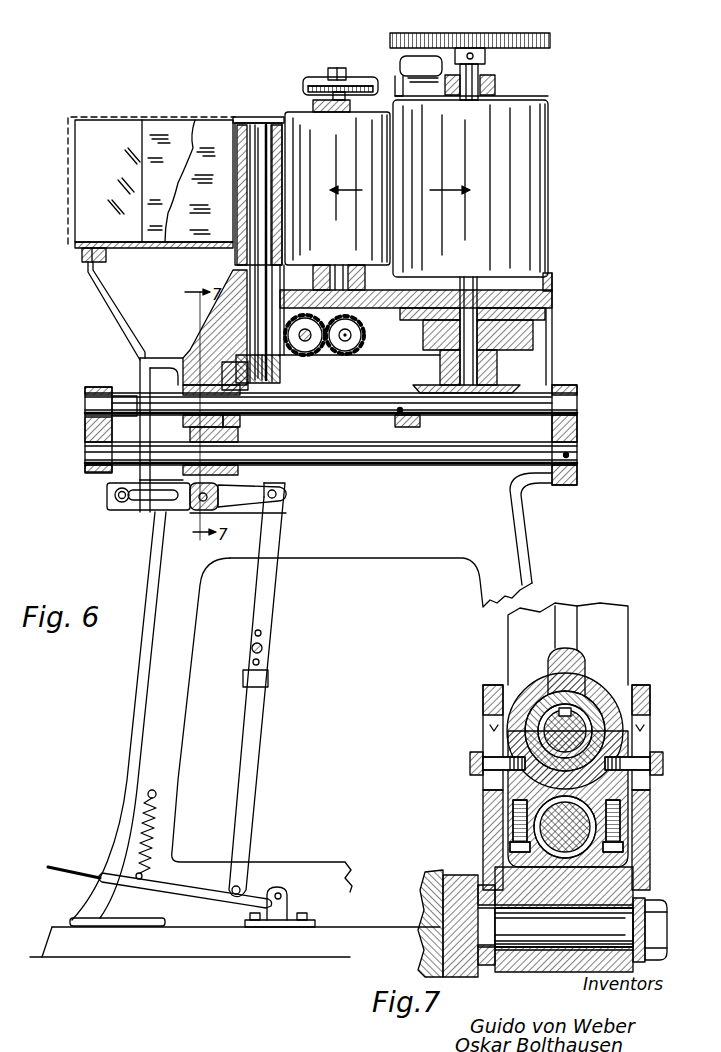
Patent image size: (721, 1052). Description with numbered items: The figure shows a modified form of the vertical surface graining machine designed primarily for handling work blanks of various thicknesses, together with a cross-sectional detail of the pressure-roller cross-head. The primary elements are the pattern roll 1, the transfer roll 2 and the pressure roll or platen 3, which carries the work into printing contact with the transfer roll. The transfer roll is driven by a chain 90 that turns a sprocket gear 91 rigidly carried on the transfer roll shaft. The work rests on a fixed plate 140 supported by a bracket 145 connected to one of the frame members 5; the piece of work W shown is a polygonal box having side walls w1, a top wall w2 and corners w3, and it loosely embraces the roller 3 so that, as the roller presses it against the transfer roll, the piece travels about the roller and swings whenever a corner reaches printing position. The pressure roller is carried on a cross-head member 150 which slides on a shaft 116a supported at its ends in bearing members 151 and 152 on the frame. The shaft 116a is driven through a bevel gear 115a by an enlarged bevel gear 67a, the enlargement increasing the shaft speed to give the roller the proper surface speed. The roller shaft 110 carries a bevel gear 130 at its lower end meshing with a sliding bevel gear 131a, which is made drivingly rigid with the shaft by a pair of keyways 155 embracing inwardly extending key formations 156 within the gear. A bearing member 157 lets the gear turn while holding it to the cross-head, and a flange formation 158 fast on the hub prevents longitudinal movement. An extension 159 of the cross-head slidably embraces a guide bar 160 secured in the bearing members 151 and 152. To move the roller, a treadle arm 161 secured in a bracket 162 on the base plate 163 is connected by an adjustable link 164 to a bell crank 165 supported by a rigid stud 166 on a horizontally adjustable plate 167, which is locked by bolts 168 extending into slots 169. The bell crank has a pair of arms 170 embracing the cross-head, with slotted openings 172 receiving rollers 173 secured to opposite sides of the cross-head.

In FIG. 6, the pattern roll 1 is at (470, 155).
In FIG. 6, the transfer roll 2 is at (337, 188).
In FIG. 6, the pressure roll or platen 3 is at (236, 122).
In FIG. 6, the frame members 5 is at (311, 699).
In FIG. 6, the bevel gear 67a is at (520, 385).
In FIG. 6, the chain 90 is at (305, 86).
In FIG. 6, the sprocket gear 91 is at (327, 78).
In FIG. 6, the shaft for the pressure roller 110 is at (252, 278).
In FIG. 6, the bevel gear 115a is at (418, 427).
In FIG. 6, the shaft 116a is at (346, 418).
In FIG. 6, the bevel gear 130 is at (282, 385).
In FIG. 6, the sliding bevel gear 131a is at (240, 430).
In FIG. 6, the fixed plate 140 is at (118, 246).
In FIG. 6, the bracket 145 is at (100, 282).
In FIG. 6, the cross-head member 150 is at (228, 322).
In FIG. 6, the bearing member 151 is at (562, 394).
In FIG. 6, the bearing member 152 is at (92, 430).
In FIG. 6, the keyways 155 is at (120, 396).
In FIG. 7, the key formations 156 is at (549, 680).
In FIG. 6, the bearing member 157 is at (188, 378).
In FIG. 6, the flange formation 158 is at (190, 428).
In FIG. 6, the extension 159 is at (215, 470).
In FIG. 6, the guide bar 160 is at (374, 462).
In FIG. 6, the treadle arm 161 is at (183, 885).
In FIG. 6, the bracket 162 is at (287, 912).
In FIG. 6, the base plate 163 is at (216, 950).
In FIG. 6, the adjustable link 164 is at (250, 748).
In FIG. 6, the bell crank 165 is at (250, 493).
In FIG. 7, the bell crank 165 is at (508, 972).
In FIG. 7, the rigid stud 166 is at (512, 972).
In FIG. 7, the horizontally adjustable plate 167 is at (470, 878).
In FIG. 6, the bolts 168 is at (118, 503).
In FIG. 6, the slots 169 is at (148, 510).
In FIG. 7, the arms 170 is at (490, 810).
In FIG. 7, the slotted openings 172 is at (490, 718).
In FIG. 7, the rollers 173 is at (486, 762).
In FIG. 6, the work W is at (76, 120).
In FIG. 6, the side walls w1 is at (80, 190).
In FIG. 6, the top wall w2 is at (258, 118).
In FIG. 6, the corners w3 is at (142, 160).